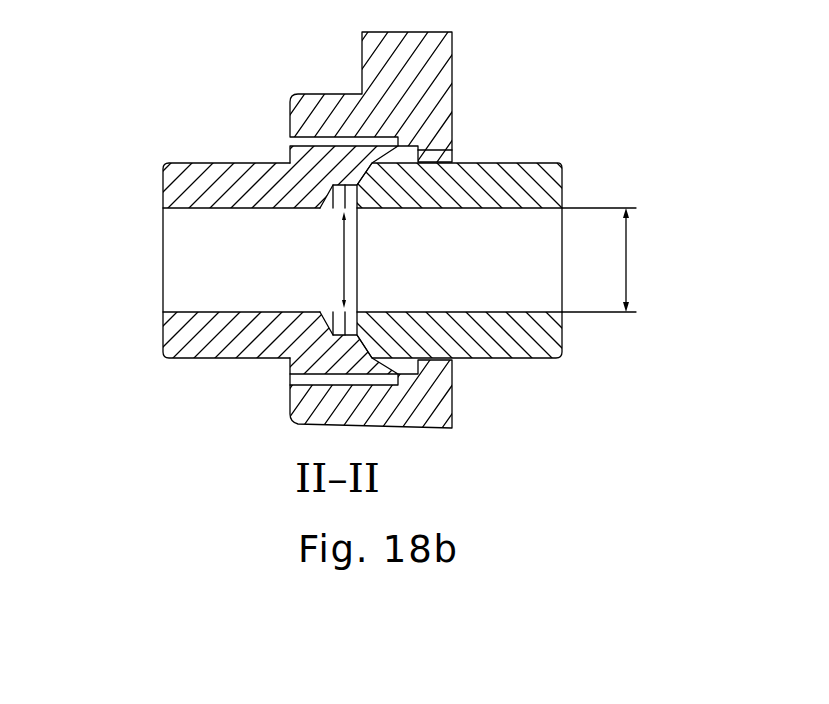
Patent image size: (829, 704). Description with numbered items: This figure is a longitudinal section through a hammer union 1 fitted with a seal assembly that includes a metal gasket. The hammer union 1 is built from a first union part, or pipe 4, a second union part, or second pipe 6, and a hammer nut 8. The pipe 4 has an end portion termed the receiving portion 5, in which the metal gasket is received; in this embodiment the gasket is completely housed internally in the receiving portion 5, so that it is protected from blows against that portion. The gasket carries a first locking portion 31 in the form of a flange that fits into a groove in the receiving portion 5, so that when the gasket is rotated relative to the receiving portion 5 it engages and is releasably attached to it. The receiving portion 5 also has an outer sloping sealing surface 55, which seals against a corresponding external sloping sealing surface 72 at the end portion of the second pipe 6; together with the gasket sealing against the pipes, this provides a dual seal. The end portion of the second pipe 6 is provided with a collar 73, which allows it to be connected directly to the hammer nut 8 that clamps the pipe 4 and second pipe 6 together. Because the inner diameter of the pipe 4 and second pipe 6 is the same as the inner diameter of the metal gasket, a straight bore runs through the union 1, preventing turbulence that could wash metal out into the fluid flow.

The hammer union 1 is at (545, 93).
The first union part 4 is at (196, 186).
The receiving portion 5 is at (278, 223).
The second union part 6 is at (563, 174).
The hammer nut 8 is at (455, 43).
The first locking portion 31 is at (345, 185).
The outer sloping sealing surface 55 is at (328, 386).
The external sloping sealing surface 72 is at (427, 360).
The collar 73 is at (454, 143).